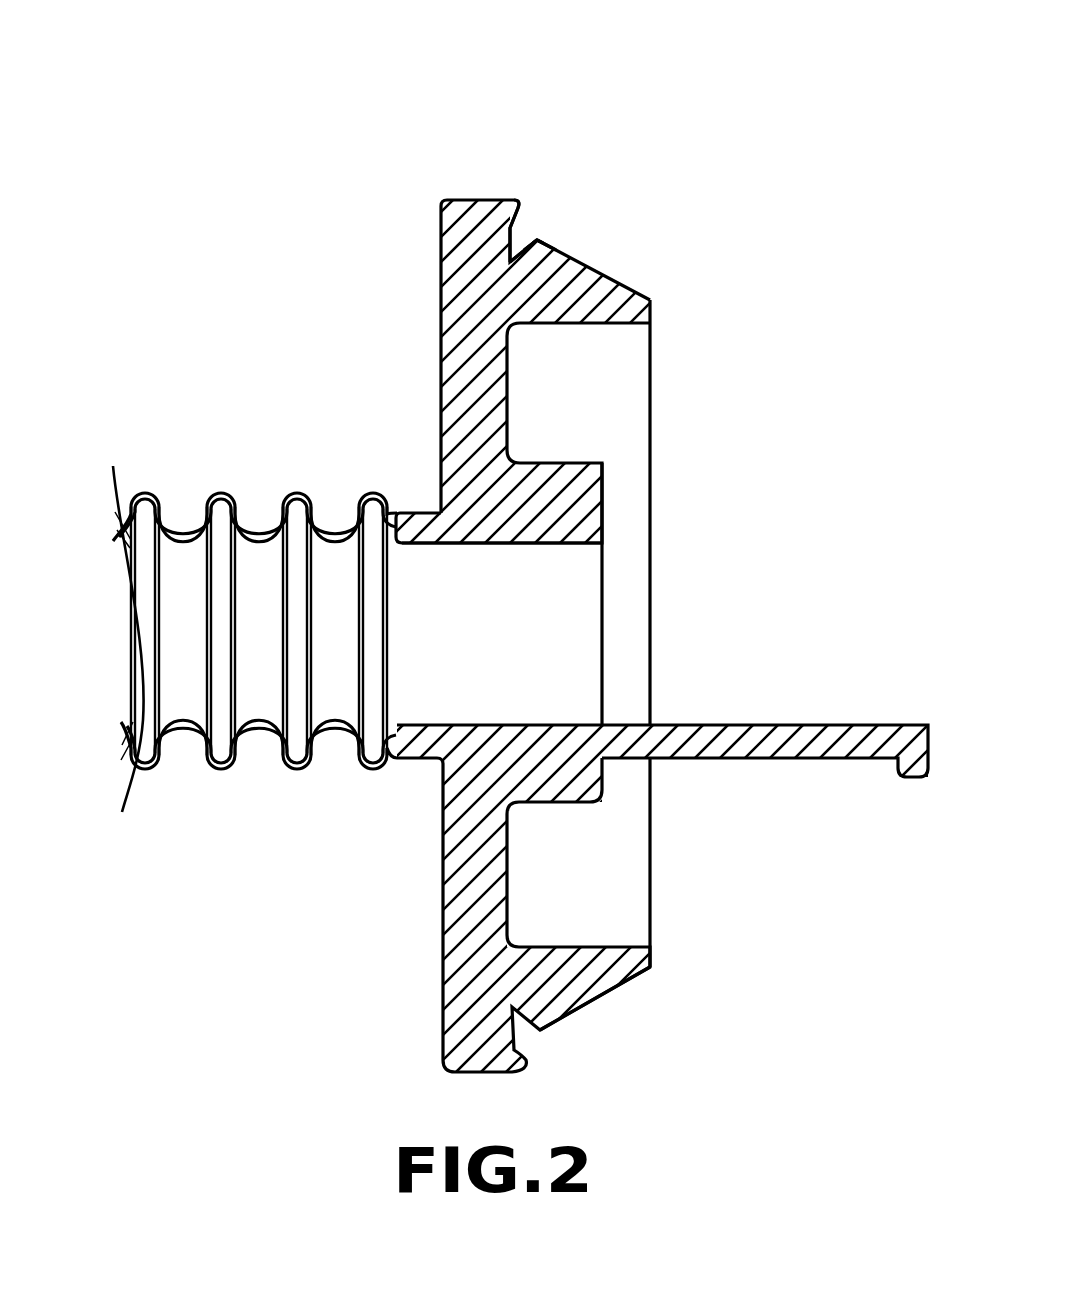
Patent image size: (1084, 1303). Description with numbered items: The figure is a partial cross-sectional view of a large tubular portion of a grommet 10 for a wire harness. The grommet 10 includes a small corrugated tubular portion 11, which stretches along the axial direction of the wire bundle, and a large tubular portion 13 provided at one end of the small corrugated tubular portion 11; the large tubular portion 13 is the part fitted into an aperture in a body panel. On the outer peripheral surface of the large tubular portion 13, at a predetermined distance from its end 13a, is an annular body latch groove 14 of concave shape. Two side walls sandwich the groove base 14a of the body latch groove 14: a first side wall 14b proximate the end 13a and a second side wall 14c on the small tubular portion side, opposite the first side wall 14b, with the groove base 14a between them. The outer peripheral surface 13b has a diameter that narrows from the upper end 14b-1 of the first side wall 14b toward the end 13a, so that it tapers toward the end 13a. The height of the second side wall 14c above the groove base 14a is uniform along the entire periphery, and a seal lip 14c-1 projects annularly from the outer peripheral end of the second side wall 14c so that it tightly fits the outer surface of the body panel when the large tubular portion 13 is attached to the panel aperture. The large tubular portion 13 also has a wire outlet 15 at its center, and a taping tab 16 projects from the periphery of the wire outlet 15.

The grommet 10 is at (124, 330).
The small corrugated tubular portion 11 is at (222, 497).
The large tubular portion 13 is at (442, 203).
The end 13a is at (651, 305).
The outer peripheral surface 13b is at (621, 281).
The body latch groove 14 is at (717, 57).
The groove base 14a is at (513, 248).
The first side wall 14b is at (538, 238).
The upper end 14b-1 is at (538, 240).
The second side wall 14c is at (510, 262).
The seal lip 14c-1 is at (528, 200).
The wire outlet 15 is at (547, 543).
The taping tab 16 is at (797, 760).